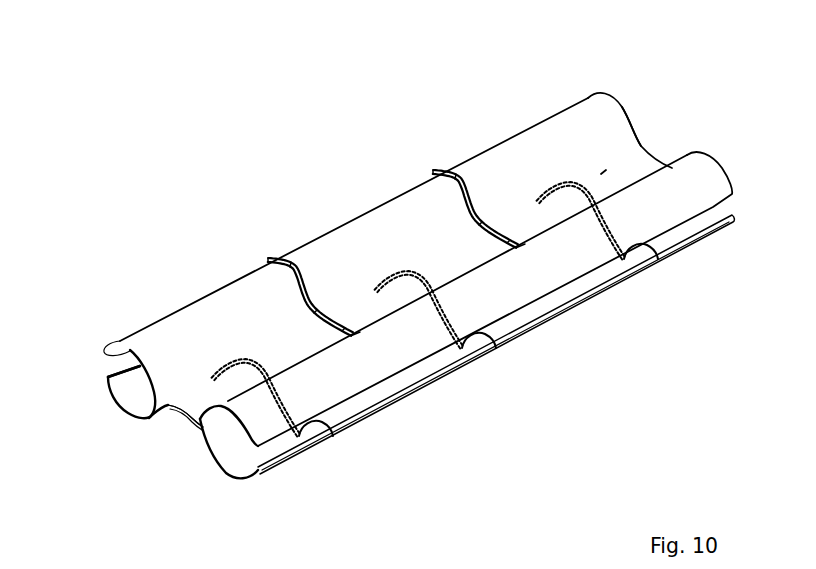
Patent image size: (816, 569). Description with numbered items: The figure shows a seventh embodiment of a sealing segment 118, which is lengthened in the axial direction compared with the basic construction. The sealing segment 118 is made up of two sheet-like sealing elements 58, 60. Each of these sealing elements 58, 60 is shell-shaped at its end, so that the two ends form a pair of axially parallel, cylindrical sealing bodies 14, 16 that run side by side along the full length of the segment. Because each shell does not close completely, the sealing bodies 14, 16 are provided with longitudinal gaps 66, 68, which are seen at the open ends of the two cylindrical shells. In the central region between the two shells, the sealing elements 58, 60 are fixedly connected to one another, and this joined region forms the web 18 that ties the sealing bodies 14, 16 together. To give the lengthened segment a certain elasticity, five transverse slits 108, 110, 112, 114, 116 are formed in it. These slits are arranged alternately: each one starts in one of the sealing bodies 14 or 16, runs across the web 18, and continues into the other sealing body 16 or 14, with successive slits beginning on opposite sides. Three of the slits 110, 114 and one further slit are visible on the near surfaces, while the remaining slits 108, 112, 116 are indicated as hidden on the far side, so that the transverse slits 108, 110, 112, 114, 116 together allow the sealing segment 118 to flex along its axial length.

The sealing segment 118 is at (86, 63).
The sealing body 14 is at (590, 115).
The sealing body 16 is at (693, 154).
The web 18 is at (603, 169).
The sealing element 60 is at (644, 140).
The longitudinal gap 68 is at (735, 206).
The longitudinal gap 66 is at (98, 369).
The sealing element 58 is at (171, 425).
The transverse slit 108 is at (329, 433).
The transverse slit 110 is at (270, 259).
The transverse slit 112 is at (505, 345).
The transverse slit 114 is at (433, 173).
The transverse slit 116 is at (646, 262).